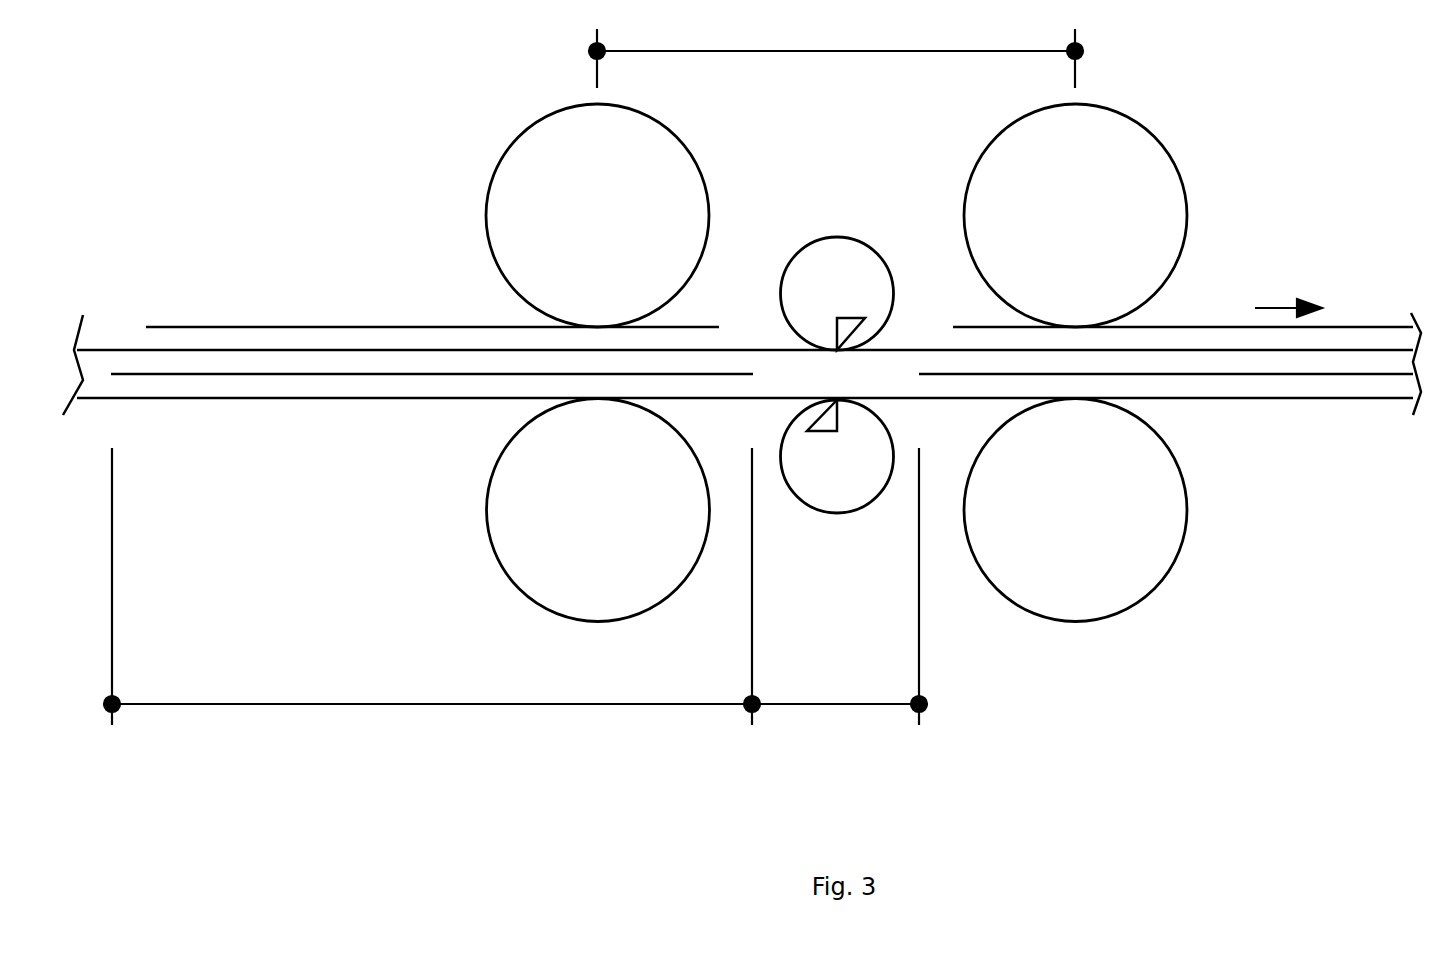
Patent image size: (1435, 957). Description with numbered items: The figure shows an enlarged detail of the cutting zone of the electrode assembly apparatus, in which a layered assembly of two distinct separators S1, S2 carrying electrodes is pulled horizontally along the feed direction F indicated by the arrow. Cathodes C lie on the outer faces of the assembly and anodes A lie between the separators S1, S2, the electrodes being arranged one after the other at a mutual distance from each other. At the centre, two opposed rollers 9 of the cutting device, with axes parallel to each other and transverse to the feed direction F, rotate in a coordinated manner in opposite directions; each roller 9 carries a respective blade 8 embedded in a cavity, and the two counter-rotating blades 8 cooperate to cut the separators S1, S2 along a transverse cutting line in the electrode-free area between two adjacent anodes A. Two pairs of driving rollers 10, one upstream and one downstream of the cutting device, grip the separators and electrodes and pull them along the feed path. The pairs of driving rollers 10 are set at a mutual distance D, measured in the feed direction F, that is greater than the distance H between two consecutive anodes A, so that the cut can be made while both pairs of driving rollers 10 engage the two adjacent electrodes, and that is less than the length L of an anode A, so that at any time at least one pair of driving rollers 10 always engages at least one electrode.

The blade 8 is at (835, 328).
The roller 9 is at (868, 256).
The driving rollers 10 is at (505, 182).
The separator S1 is at (1240, 398).
The separator S2 is at (205, 350).
The cathode C is at (352, 327).
The anode A is at (267, 374).
The feed direction F is at (1271, 308).
The mutual distance D is at (836, 54).
The length L is at (432, 586).
The mutual distance H is at (839, 586).